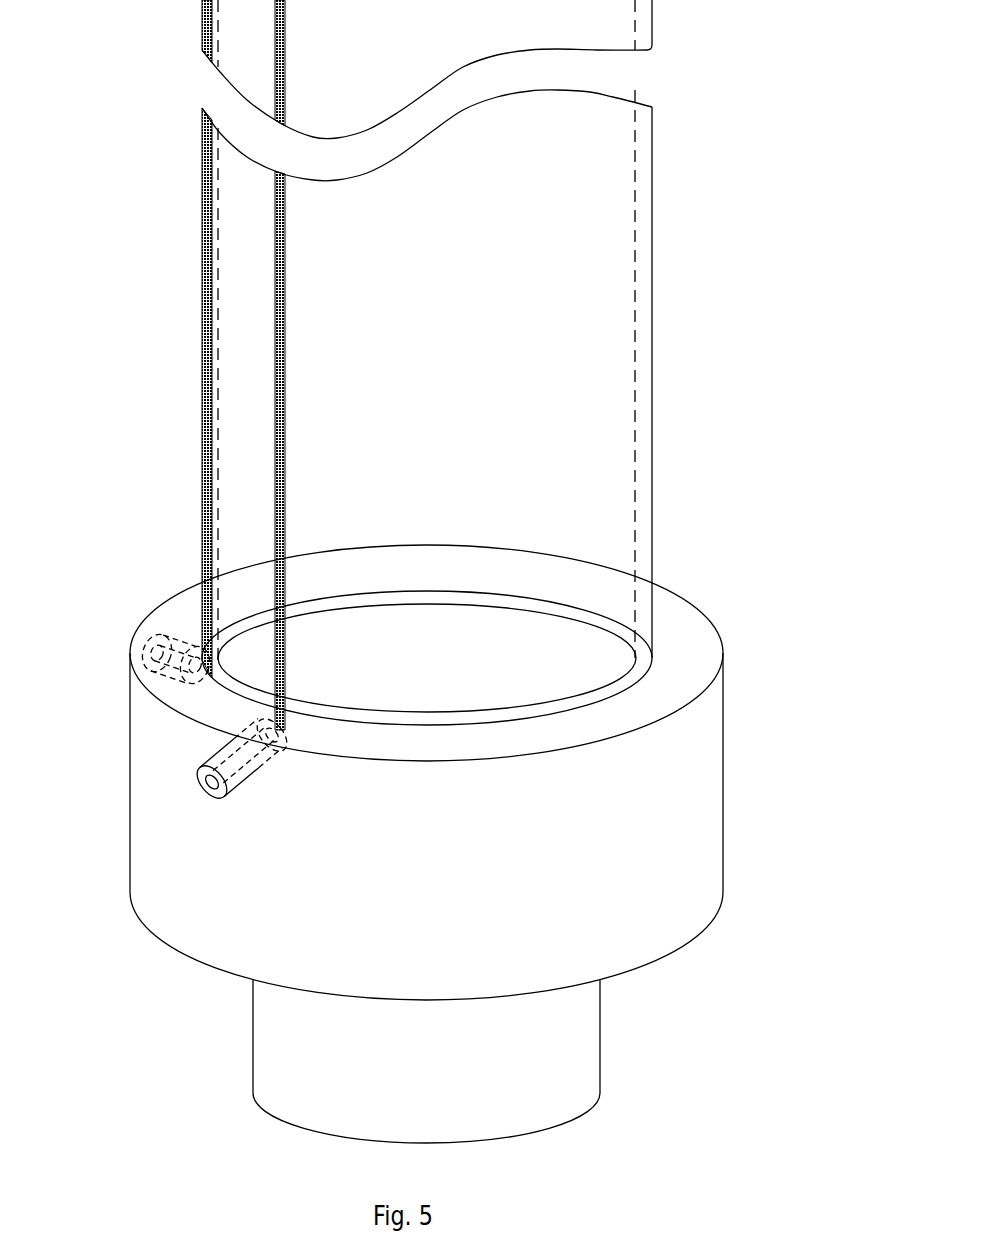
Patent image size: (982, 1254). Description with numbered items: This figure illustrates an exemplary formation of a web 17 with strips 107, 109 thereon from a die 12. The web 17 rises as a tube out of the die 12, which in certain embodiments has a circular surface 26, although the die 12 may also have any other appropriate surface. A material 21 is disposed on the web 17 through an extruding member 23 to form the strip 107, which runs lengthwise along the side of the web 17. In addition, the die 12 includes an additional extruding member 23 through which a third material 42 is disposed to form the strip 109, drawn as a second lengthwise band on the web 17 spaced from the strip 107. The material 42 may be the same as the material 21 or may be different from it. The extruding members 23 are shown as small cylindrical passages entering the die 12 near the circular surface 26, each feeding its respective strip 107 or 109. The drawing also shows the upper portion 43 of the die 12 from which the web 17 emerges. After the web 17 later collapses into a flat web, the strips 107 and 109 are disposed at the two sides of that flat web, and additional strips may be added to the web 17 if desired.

The die 12 is at (725, 838).
The web 17 is at (653, 180).
The material 21 is at (150, 652).
The extruding member 23 is at (217, 665).
The circular surface 26 is at (335, 713).
The third material 42 is at (207, 785).
The collar top face 43 is at (705, 742).
The strip 107 is at (203, 425).
The strip 109 is at (285, 460).